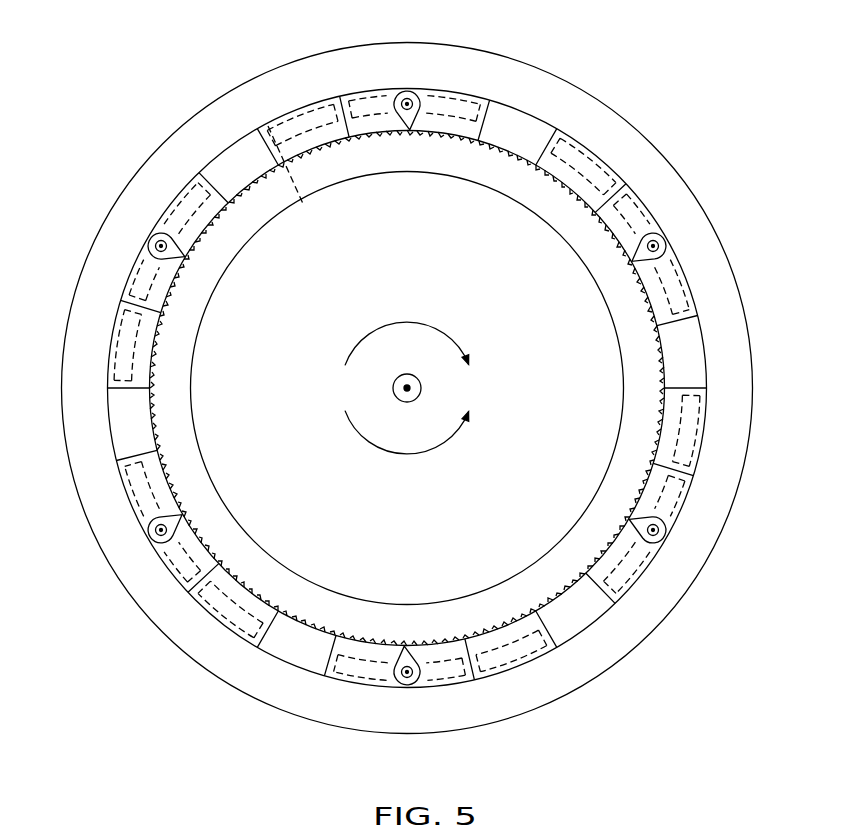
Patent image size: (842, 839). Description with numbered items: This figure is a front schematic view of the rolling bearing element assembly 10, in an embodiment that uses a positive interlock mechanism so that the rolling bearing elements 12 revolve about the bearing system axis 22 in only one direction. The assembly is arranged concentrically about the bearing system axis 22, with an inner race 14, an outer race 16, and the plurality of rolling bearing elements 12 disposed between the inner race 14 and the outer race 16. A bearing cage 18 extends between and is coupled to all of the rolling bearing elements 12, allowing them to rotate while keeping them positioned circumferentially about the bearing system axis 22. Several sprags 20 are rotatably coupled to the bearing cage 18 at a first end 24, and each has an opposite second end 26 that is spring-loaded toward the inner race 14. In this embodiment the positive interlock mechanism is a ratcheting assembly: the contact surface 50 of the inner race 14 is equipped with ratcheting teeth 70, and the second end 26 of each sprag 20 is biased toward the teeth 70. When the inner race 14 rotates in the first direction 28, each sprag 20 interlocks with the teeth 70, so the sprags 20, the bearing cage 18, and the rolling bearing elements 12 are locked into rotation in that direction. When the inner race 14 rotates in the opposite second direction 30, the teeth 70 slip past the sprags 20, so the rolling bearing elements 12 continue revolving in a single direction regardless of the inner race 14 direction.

The rolling bearing element assembly 10 is at (121, 71).
The rolling bearing elements 12 is at (120, 311).
The inner race 14 is at (636, 432).
The outer race 16 is at (634, 150).
The bearing cage 18 is at (137, 500).
The sprags 20 is at (418, 99).
The bearing system axis 22 is at (421, 393).
The first end 24 is at (395, 101).
The second end 26 is at (189, 262).
The first direction 28 is at (404, 455).
The second direction 30 is at (404, 322).
The contact surface 50 is at (240, 218).
The ratcheting teeth 70 is at (306, 204).